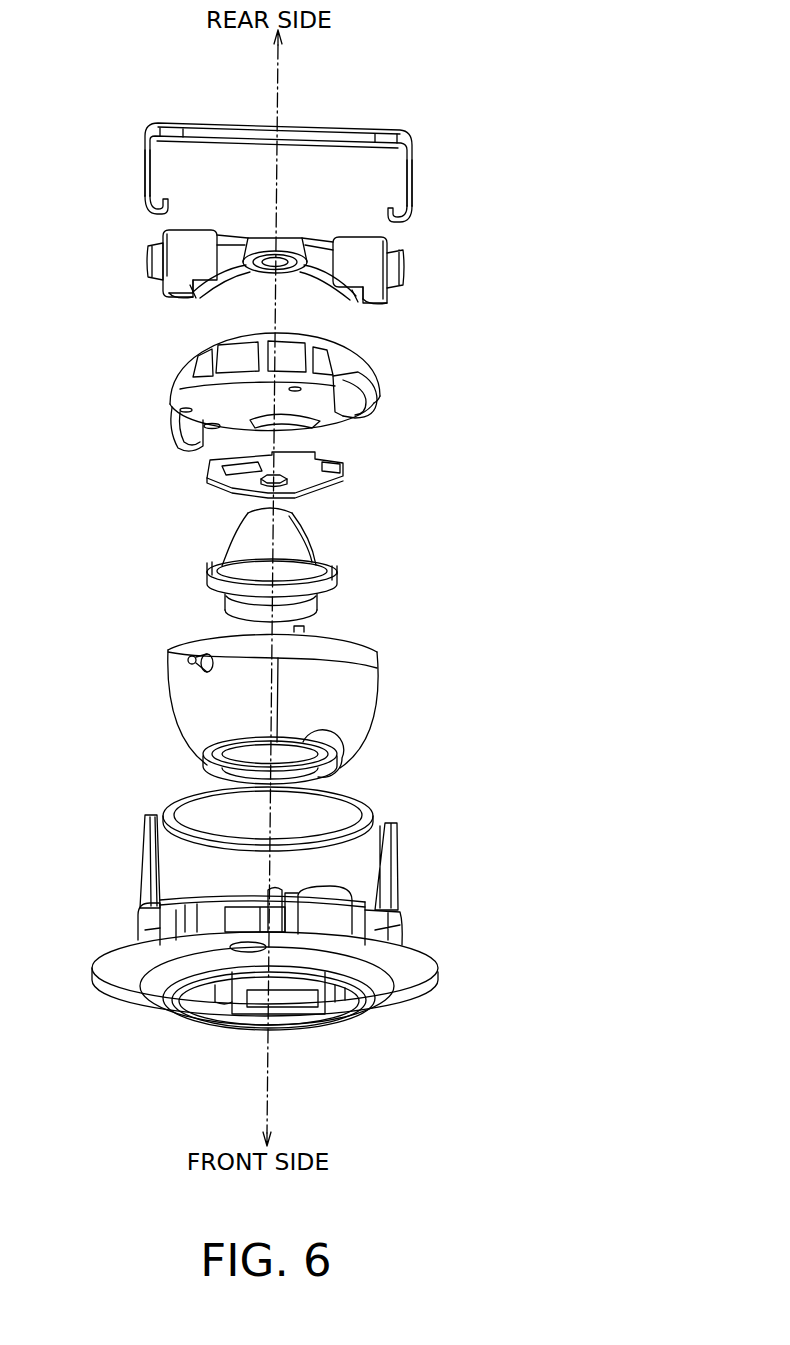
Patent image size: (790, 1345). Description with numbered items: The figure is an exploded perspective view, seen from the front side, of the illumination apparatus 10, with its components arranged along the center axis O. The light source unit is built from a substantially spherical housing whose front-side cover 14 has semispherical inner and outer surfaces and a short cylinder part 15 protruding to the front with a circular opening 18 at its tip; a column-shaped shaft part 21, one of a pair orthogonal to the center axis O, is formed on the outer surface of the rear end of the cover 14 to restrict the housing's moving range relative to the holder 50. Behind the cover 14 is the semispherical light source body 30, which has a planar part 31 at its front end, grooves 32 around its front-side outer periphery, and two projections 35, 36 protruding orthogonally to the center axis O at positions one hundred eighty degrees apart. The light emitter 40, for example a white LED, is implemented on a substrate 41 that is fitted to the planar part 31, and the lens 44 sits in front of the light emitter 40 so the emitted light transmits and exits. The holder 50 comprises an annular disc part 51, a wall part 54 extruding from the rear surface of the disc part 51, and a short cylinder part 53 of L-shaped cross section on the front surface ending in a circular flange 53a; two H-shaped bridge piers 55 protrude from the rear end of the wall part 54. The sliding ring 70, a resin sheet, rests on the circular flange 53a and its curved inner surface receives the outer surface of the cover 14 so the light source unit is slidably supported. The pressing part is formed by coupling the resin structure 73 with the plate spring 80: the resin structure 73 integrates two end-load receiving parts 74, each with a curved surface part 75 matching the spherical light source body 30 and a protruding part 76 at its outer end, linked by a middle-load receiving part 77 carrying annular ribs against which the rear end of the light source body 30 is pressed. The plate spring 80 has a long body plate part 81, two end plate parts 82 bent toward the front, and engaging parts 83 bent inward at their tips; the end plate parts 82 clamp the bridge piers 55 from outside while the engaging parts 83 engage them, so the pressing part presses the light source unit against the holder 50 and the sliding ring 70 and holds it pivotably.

The illumination apparatus 10 is at (487, 124).
The cover 14 is at (293, 685).
The short cylinder part 15 is at (206, 771).
The circular opening 18 is at (342, 743).
The shaft part 21 is at (190, 660).
The light source body 30 is at (270, 390).
The planar part 31 is at (346, 425).
The groove 32 is at (340, 358).
The projection 35 is at (368, 398).
The projection 36 is at (170, 440).
The light emitter 40 is at (307, 486).
The substrate 41 is at (320, 479).
The lens 44 is at (313, 540).
The holder 50 is at (280, 951).
The annular disc part 51 is at (416, 997).
The short cylinder part 53 is at (281, 1027).
The circular flange 53a is at (185, 1003).
The wall part 54 is at (138, 923).
The bridge pier 55 is at (150, 862).
The sliding ring 70 is at (357, 803).
The resin structure 73 is at (307, 256).
The end-load receiving part 74 is at (197, 248).
The curved surface part 75 is at (222, 270).
The protruding part 76 is at (172, 298).
The middle-load receiving part 77 is at (268, 242).
The plate spring 80 is at (277, 150).
The body plate part 81 is at (206, 126).
The end plate part 82 is at (144, 166).
The engaging part 83 is at (150, 214).
The center axis O is at (270, 868).